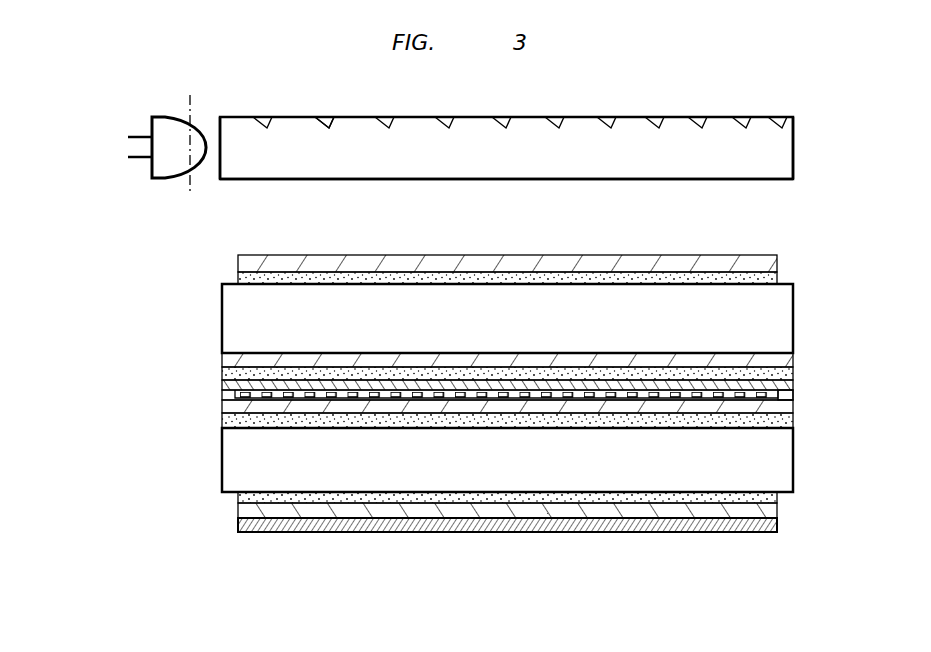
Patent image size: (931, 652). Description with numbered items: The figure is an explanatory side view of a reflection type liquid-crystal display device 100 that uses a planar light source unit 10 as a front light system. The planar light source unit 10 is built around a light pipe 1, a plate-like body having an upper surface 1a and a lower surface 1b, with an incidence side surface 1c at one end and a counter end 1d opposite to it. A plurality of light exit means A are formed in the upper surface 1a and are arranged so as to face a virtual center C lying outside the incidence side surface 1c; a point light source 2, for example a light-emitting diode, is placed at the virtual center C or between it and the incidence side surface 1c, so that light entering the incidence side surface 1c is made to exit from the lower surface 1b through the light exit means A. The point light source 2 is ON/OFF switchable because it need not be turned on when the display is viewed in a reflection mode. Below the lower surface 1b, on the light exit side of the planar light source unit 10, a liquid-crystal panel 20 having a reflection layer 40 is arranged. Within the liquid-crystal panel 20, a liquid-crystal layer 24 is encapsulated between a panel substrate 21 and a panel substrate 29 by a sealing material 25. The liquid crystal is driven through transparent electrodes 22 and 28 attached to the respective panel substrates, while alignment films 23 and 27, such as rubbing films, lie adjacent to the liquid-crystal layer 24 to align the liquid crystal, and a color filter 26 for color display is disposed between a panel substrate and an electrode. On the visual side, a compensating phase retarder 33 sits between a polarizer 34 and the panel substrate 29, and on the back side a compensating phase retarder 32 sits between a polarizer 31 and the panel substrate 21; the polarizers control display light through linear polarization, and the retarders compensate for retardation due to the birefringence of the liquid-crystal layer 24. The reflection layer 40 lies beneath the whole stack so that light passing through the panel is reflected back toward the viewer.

The reflection type liquid-crystal display device 100 is at (77, 328).
The planar light source unit 10 is at (127, 218).
The liquid-crystal panel 20 is at (134, 550).
The light pipe 1 is at (675, 135).
The upper surface 1a is at (742, 115).
The lower surface 1b is at (740, 180).
The incidence side surface 1c is at (216, 125).
The counter end 1d is at (795, 150).
The point light source 2 is at (172, 120).
The light exit means A is at (327, 115).
The virtual center C is at (189, 158).
The panel substrate 21 is at (228, 460).
The transparent electrode 22 is at (222, 421).
The alignment film 23 is at (222, 412).
The liquid-crystal layer 24 is at (235, 393).
The sealing material 25 is at (793, 395).
The color filter 26 is at (788, 362).
The alignment film 27 is at (222, 384).
The transparent electrode 28 is at (222, 374).
The panel substrate 29 is at (232, 327).
The polarizer 31 is at (240, 513).
The compensating phase retarder 32 is at (240, 497).
The compensating phase retarder 33 is at (240, 279).
The polarizer 34 is at (240, 261).
The reflection layer 40 is at (777, 525).